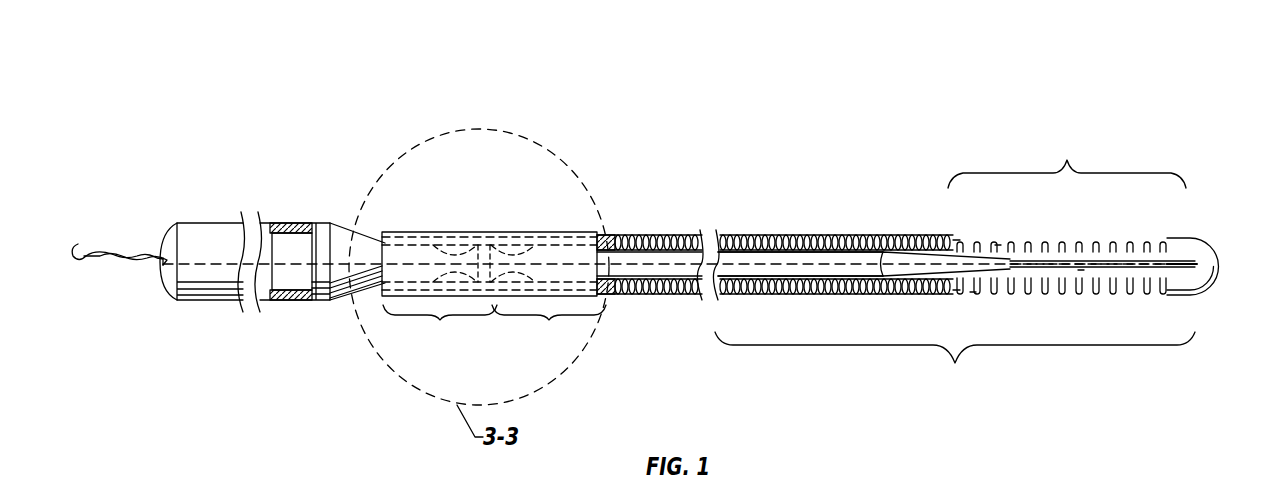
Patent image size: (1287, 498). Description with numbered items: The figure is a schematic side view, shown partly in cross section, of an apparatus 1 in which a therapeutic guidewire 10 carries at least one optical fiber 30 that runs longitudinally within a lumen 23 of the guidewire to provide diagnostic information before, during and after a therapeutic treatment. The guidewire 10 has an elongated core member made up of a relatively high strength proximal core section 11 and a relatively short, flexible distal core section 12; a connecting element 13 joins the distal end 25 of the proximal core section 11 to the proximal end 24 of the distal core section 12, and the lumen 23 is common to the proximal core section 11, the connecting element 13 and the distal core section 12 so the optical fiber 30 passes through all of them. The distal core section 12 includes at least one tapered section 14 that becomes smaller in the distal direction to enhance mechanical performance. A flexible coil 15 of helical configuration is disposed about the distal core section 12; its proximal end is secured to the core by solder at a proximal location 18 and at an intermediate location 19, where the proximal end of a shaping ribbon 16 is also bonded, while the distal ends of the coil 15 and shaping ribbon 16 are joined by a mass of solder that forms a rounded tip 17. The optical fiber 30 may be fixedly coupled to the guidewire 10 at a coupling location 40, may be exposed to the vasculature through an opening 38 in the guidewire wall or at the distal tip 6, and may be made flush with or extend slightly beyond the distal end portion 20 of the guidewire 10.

The apparatus 1 is at (621, 84).
The distal tip 6 is at (1197, 265).
The therapeutic guidewire 10 is at (750, 250).
The proximal core section 11 is at (415, 244).
The distal core section 12 is at (542, 247).
The connecting element 13 is at (421, 240).
The tapered section 14 is at (849, 243).
The flexible coil 15 is at (973, 293).
The shaping ribbon 16 is at (1060, 262).
The rounded tip 17 is at (1203, 253).
The proximal location 18 is at (617, 242).
The intermediate location 19 is at (940, 240).
The distal end portion 20 is at (955, 364).
The lumen 23 is at (279, 278).
The proximal end of the distal core section 24 is at (784, 239).
The distal end of the proximal core section 25 is at (431, 337).
The optical fiber 30 is at (295, 273).
The opening 38 is at (997, 245).
The coupling location 40 is at (1080, 270).